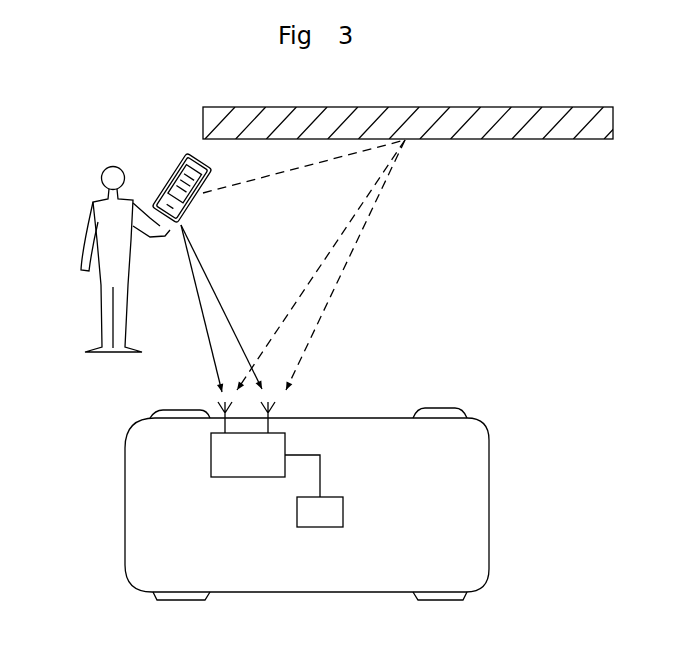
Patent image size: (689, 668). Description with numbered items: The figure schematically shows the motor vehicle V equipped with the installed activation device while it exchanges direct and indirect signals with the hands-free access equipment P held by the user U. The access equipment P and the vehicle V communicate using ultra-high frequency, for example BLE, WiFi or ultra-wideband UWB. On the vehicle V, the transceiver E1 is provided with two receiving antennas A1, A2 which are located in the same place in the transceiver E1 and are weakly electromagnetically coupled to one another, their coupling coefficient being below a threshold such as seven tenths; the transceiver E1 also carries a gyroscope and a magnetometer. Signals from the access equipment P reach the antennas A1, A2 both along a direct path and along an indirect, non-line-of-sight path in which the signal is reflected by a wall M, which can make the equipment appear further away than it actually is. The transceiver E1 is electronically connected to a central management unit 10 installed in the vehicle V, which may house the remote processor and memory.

The wall M is at (545, 122).
The hands-free access equipment P is at (166, 173).
The user U is at (99, 291).
The receiving antenna A1 is at (211, 396).
The receiving antenna A2 is at (289, 391).
The motor vehicle V is at (453, 447).
The transceiver E1 is at (201, 450).
The central management unit 10 is at (333, 505).